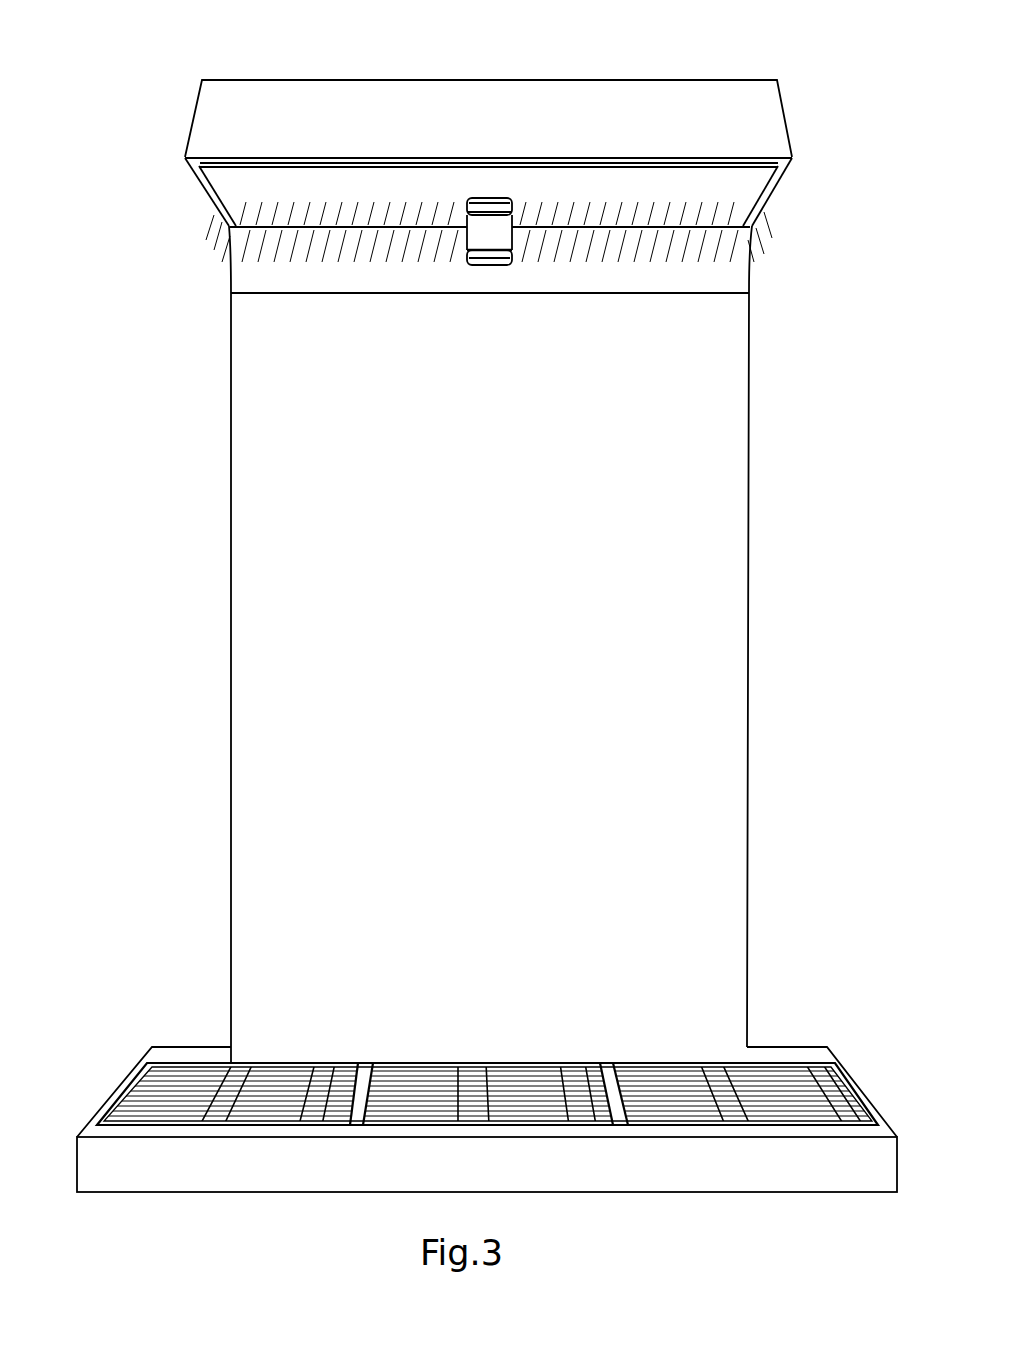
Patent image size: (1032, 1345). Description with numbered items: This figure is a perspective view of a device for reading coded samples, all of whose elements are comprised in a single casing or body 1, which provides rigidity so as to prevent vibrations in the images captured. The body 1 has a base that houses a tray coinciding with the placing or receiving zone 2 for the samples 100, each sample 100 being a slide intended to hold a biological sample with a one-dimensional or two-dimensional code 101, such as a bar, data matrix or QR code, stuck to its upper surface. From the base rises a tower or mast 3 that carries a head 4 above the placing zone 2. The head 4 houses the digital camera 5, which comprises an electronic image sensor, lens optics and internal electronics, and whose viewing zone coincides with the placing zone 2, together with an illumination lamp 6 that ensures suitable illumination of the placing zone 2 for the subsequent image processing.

The casing or body 1 is at (185, 665).
The placing zone 2 is at (788, 1055).
The tower or mast 3 is at (732, 498).
The head 4 is at (488, 88).
The digital camera 5 is at (490, 265).
The illumination lamp 6 is at (758, 190).
The sample 100 is at (178, 1103).
The code 101 is at (220, 1102).